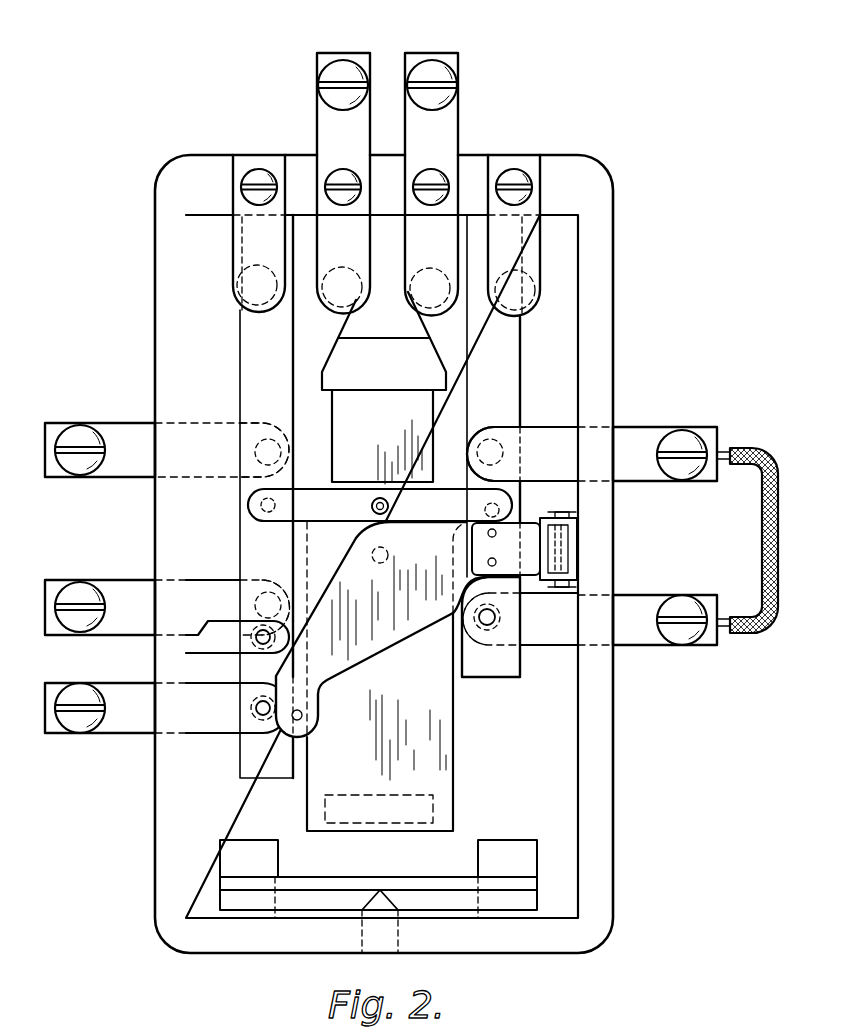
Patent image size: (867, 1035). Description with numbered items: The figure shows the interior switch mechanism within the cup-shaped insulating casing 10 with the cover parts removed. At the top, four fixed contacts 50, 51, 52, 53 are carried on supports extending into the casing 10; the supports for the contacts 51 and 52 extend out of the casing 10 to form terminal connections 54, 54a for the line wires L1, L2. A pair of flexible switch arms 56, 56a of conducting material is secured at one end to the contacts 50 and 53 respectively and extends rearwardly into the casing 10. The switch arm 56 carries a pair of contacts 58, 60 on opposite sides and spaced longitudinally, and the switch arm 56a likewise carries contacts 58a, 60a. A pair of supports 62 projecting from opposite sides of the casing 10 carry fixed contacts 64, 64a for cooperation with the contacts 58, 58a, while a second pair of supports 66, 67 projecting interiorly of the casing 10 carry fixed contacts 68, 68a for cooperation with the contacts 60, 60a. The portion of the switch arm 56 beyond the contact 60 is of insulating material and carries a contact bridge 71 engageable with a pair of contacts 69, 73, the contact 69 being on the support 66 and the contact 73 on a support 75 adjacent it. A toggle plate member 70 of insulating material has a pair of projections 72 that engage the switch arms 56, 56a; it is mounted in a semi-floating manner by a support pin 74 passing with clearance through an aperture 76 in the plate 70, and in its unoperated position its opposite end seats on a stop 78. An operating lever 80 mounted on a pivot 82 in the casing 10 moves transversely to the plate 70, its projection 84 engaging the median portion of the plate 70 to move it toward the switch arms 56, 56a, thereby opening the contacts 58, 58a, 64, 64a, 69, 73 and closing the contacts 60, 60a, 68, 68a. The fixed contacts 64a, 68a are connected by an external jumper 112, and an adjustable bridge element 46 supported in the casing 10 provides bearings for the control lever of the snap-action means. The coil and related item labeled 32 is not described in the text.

The casing 10 is at (598, 181).
The electromagnet coil 32 is at (371, 400).
The adjustable bridge element 46 is at (322, 884).
The fixed contact 50 is at (268, 300).
The fixed contact 51 is at (334, 300).
The fixed contact 52 is at (407, 293).
The fixed contact 53 is at (504, 302).
The terminal connection 54 is at (314, 183).
The terminal connection 54a is at (451, 180).
The flexible switch arm 56 is at (250, 357).
The flexible switch arm 56a is at (520, 342).
The contact 58 is at (264, 425).
The contact 58a is at (520, 426).
The contact 60 is at (269, 582).
The contact 60a is at (499, 642).
The support 62 is at (381, 426).
The fixed contact 64 is at (276, 440).
The fixed contact 64a is at (492, 440).
The support 66 is at (167, 606).
The support 67 is at (590, 652).
The fixed contact 68 is at (276, 594).
The fixed contact 68a is at (489, 625).
The contact 69 is at (237, 637).
The toggle plate member 70 is at (418, 697).
The contact bridge 71 is at (255, 669).
The projection 72 is at (403, 501).
The contact 73 is at (265, 718).
The support pin 74 is at (389, 507).
The support 75 is at (166, 730).
The aperture 76 is at (363, 506).
The stop 78 is at (388, 823).
The operating lever 80 is at (370, 655).
The pivot 82 is at (580, 524).
The projection 84 is at (386, 552).
The external jumper 112 is at (771, 460).
The line wire L1 is at (341, 39).
The line wire L2 is at (432, 42).